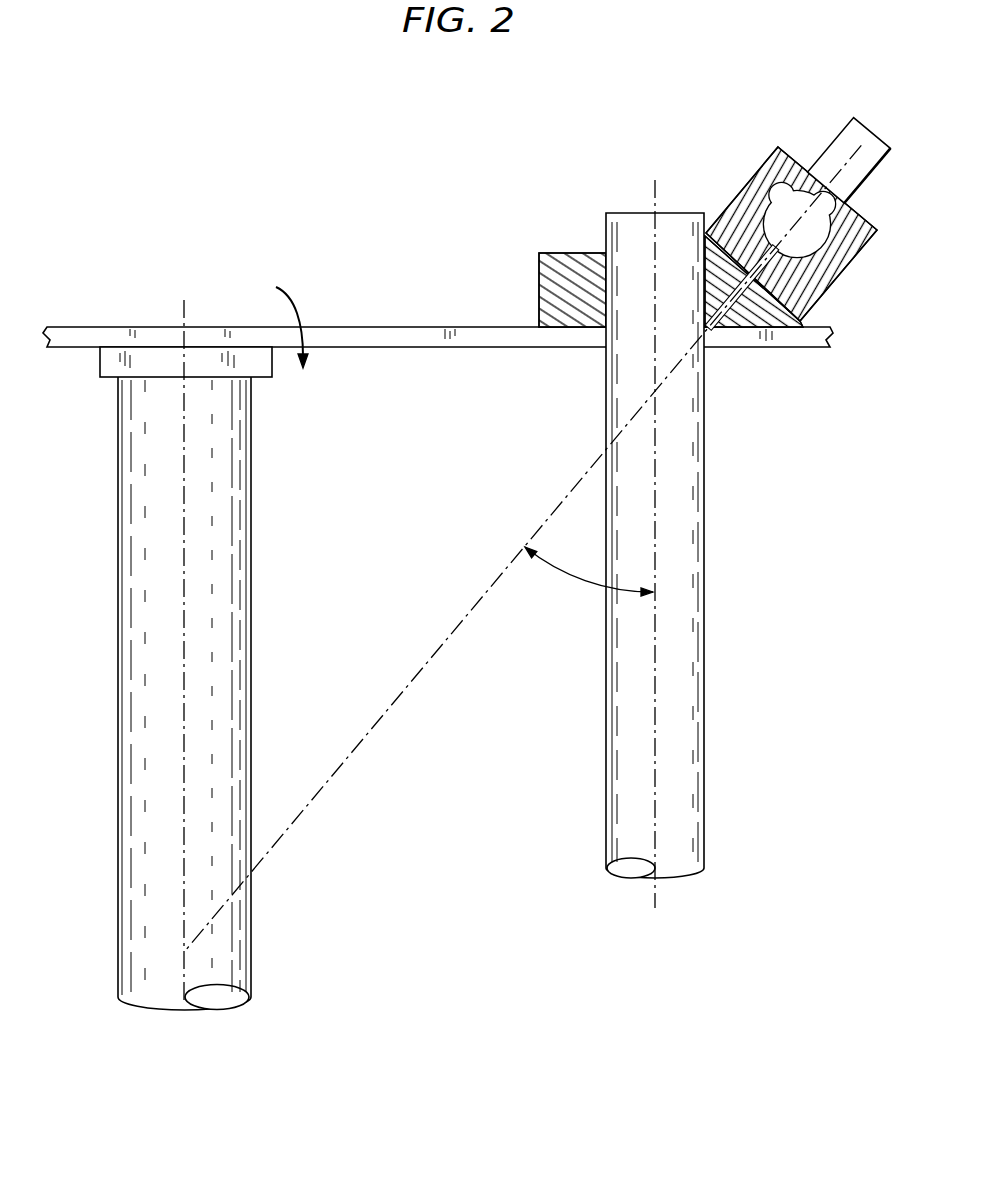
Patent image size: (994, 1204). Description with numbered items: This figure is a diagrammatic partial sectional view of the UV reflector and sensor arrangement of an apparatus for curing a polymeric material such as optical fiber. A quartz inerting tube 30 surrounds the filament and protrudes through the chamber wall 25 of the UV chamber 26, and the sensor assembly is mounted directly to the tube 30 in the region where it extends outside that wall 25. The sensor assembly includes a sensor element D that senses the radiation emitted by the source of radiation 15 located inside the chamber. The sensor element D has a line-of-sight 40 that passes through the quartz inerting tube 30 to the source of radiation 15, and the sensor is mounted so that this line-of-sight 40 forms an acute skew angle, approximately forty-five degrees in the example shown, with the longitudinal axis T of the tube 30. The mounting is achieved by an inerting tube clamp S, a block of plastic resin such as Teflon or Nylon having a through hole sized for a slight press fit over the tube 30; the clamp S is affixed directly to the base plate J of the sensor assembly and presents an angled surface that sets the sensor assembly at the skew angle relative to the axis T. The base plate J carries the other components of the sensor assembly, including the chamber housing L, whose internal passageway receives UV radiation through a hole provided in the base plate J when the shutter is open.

The source of radiation 15 is at (230, 502).
The chamber wall 25 is at (340, 327).
The UV chamber 26 is at (280, 316).
The quartz inerting tube 30 is at (623, 227).
The line-of-sight 40 is at (378, 720).
The inerting tube clamp S is at (550, 253).
The chamber housing L is at (750, 188).
The sensor element D is at (837, 143).
The base plate J is at (787, 327).
The longitudinal axis T is at (655, 558).